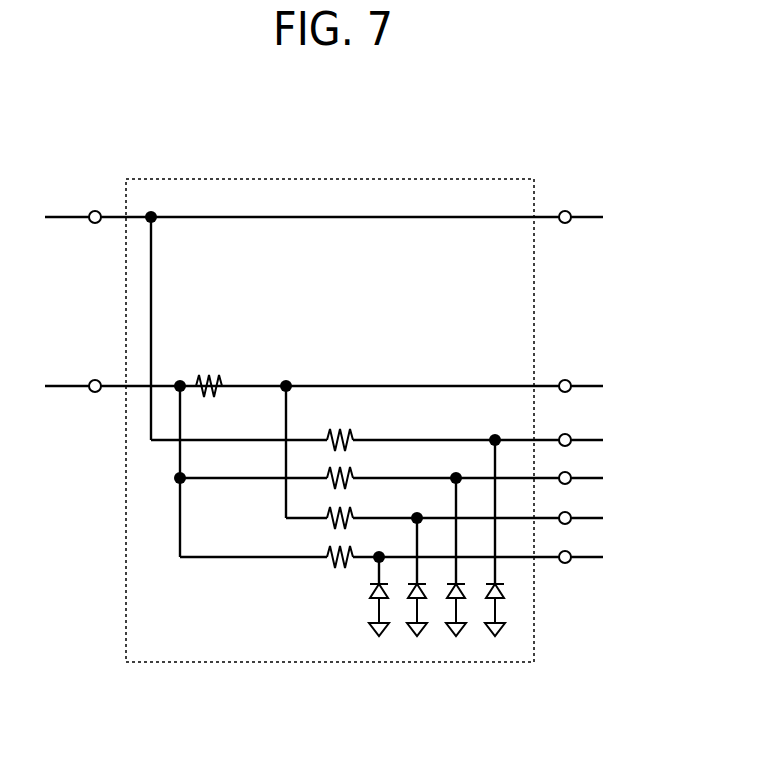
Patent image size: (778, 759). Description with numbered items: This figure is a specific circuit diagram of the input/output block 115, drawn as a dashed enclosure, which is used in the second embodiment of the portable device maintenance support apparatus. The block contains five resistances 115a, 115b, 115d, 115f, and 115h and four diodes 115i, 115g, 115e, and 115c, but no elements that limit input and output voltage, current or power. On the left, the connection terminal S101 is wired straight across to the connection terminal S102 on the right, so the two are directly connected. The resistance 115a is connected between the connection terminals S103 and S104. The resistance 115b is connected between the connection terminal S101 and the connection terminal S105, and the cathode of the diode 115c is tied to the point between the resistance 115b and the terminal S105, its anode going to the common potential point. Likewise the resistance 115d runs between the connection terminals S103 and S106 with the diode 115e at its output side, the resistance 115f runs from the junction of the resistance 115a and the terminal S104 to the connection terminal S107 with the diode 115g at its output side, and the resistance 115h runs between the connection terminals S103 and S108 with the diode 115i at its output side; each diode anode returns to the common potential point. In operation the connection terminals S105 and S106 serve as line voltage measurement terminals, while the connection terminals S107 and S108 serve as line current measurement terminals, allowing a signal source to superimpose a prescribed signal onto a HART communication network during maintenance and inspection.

The protection circuit 115 is at (204, 179).
The resistance 115a is at (214, 396).
The resistance 115b is at (354, 446).
The diode 115c is at (488, 591).
The resistance 115d is at (354, 484).
The diode 115e is at (448, 591).
The resistance 115f is at (330, 522).
The diode 115g is at (410, 591).
The resistance 115h is at (330, 560).
The diode 115i is at (372, 591).
The connection terminal S101 is at (95, 223).
The connection terminal S102 is at (566, 223).
The connection terminal S103 is at (95, 392).
The connection terminal S104 is at (566, 380).
The connection terminal S105 is at (570, 446).
The connection terminal S106 is at (570, 484).
The connection terminal S107 is at (570, 524).
The connection terminal S108 is at (570, 563).